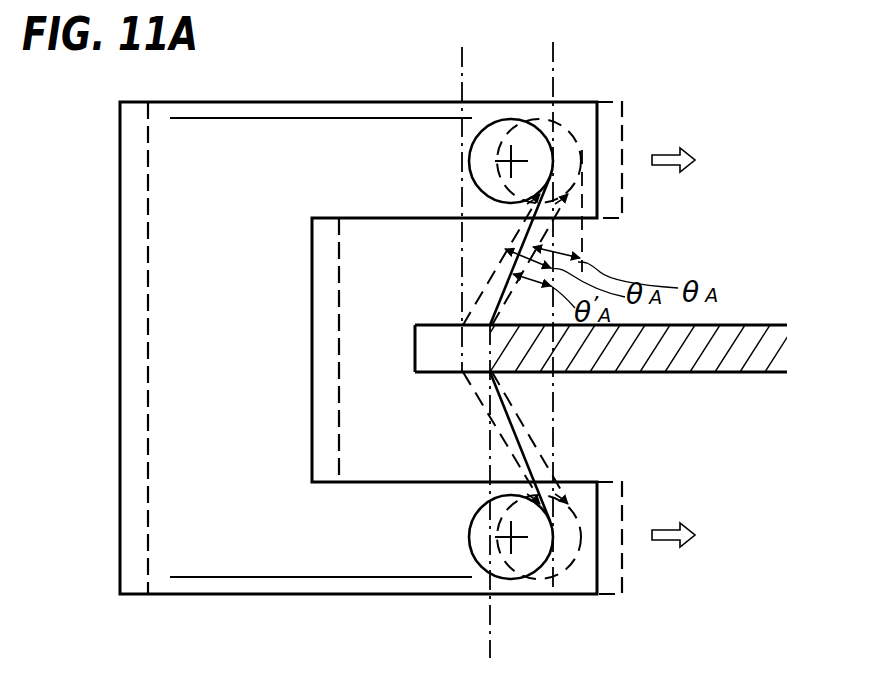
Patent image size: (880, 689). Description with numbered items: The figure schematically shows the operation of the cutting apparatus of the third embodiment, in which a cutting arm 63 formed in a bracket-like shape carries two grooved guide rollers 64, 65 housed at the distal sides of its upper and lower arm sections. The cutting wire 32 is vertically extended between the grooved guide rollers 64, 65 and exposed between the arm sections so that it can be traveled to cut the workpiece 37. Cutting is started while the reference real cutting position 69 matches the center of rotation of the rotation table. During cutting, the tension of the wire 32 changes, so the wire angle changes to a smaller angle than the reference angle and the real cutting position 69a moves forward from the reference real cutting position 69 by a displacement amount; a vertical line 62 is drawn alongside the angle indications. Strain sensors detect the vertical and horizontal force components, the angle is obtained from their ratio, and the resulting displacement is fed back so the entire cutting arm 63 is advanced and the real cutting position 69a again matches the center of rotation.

The cutting wire 32 is at (260, 118).
The workpiece 37 is at (613, 363).
The vertical reference line 62 is at (555, 52).
The cutting arm 63 is at (263, 562).
The grooved guide roller 64 is at (490, 140).
The grooved guide roller 65 is at (477, 558).
The reference real cutting position 69 is at (462, 68).
The real cutting position 69a is at (493, 615).